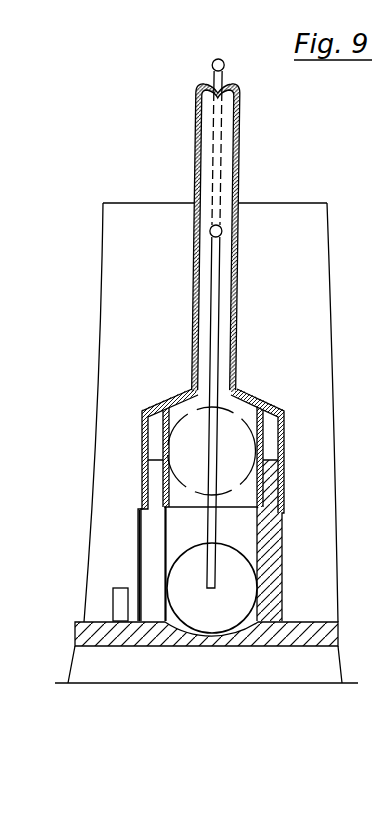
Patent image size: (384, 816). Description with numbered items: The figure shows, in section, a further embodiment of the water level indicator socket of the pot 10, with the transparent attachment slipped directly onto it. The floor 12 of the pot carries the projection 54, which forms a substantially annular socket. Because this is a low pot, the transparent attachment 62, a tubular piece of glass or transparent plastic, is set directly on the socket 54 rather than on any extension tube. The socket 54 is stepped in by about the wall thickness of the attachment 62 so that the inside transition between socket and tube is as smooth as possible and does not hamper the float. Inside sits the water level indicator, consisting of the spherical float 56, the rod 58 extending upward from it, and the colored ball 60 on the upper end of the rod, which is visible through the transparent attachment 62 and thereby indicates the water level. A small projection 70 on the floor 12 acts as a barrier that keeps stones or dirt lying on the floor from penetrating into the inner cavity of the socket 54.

The pot 10 is at (322, 199).
The floor 12 is at (325, 633).
The projection 54 is at (265, 558).
The spherical float 56 is at (182, 572).
The rod 58 is at (216, 313).
The colored ball 60 is at (223, 232).
The transparent attachment 62 is at (239, 377).
The small projection 70 is at (118, 603).